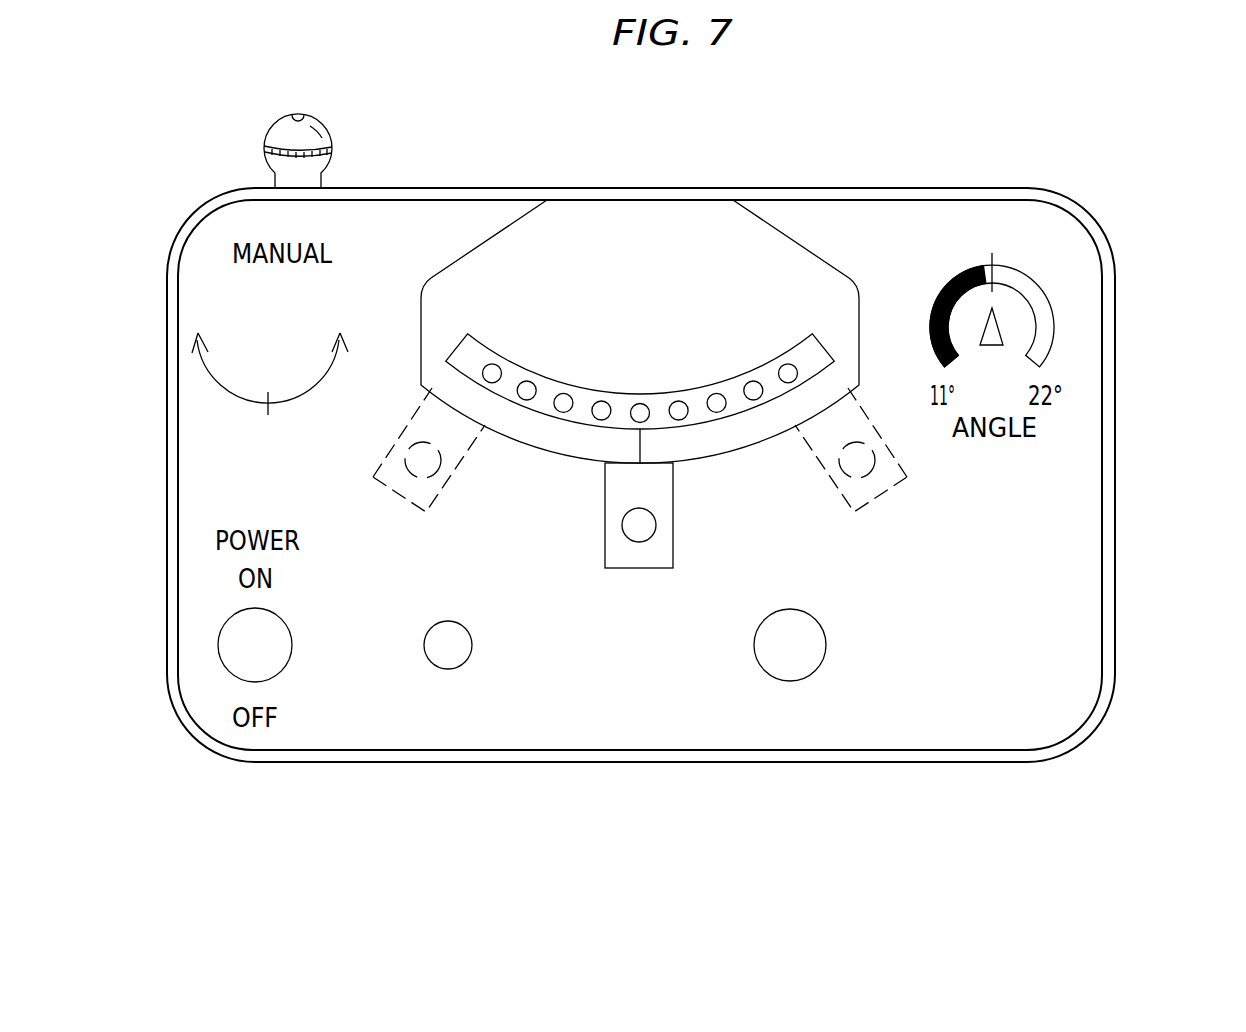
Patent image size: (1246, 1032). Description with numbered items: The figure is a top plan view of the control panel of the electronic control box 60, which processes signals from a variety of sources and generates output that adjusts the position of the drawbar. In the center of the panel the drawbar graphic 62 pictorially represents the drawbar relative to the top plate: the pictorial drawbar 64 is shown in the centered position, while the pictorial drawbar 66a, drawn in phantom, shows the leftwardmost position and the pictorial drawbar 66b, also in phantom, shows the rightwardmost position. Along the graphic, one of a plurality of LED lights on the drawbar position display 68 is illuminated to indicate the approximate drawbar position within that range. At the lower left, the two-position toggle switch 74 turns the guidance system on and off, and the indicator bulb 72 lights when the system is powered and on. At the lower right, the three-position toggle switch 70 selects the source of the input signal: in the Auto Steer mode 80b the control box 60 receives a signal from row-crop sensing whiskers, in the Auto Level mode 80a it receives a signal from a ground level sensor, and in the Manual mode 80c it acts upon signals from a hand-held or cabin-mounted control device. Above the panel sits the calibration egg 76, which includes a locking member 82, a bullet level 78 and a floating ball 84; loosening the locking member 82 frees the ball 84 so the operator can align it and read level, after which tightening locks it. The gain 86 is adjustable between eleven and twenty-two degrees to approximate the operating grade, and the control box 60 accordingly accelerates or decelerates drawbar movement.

The electronic control box 60 is at (947, 98).
The drawbar graphic 62 is at (697, 227).
The pictorial drawbar 64 is at (645, 562).
The pictorial drawbar 66a is at (396, 486).
The pictorial drawbar 66b is at (880, 482).
The drawbar position display 68 is at (812, 355).
The three-position toggle switch 70 is at (800, 652).
The indicator bulb 72 is at (448, 647).
The two-position toggle switch 74 is at (250, 652).
The calibration egg 76 is at (270, 138).
The bullet level 78 is at (297, 113).
The Auto Level mode 80a is at (1033, 648).
The Auto Steer mode 80b is at (1038, 613).
The Manual mode 80c is at (970, 687).
The locking member 82 is at (331, 150).
The floating ball 84 is at (330, 134).
The gain 86 is at (997, 340).